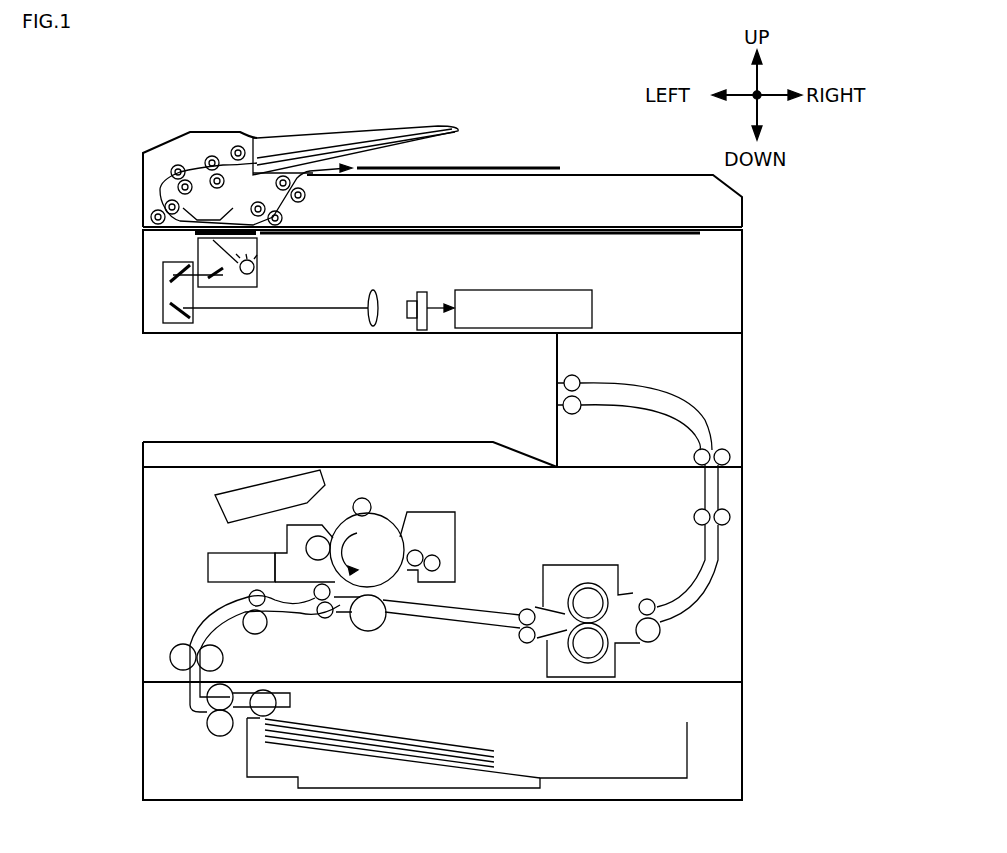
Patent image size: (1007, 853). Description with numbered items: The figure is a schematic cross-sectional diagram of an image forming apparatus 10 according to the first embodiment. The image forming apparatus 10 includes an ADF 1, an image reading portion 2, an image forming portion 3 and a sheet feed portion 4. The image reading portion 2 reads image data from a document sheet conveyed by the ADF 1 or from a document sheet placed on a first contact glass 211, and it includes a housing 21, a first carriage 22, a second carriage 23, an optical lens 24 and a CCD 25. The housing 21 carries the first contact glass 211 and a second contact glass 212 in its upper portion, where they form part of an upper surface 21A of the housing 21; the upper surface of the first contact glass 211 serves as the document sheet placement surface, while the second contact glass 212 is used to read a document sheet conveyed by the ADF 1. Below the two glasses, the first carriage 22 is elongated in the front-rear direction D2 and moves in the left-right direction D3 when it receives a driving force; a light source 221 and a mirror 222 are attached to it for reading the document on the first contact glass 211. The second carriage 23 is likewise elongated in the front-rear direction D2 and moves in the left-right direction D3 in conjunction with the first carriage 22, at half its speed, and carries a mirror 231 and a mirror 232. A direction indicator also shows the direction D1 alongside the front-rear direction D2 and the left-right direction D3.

The image forming apparatus 10 is at (133, 100).
The ADF 1 is at (135, 155).
The image reading portion 2 is at (135, 238).
The image forming portion 3 is at (160, 490).
The sheet feed portion 4 is at (160, 698).
The housing 21 is at (745, 273).
The upper surface 21A is at (707, 229).
The first contact glass 211 is at (608, 237).
The second contact glass 212 is at (193, 237).
The first carriage 22 is at (258, 275).
The light source 221 is at (255, 266).
The mirror 222 is at (222, 276).
The second carriage 23 is at (165, 310).
The mirror 231 is at (170, 278).
The mirror 232 is at (183, 323).
The optical lens 24 is at (375, 292).
The CCD 25 is at (425, 292).
The up-down direction D1 is at (752, 82).
The front-rear direction D2 is at (762, 100).
The left-right direction D3 is at (750, 97).